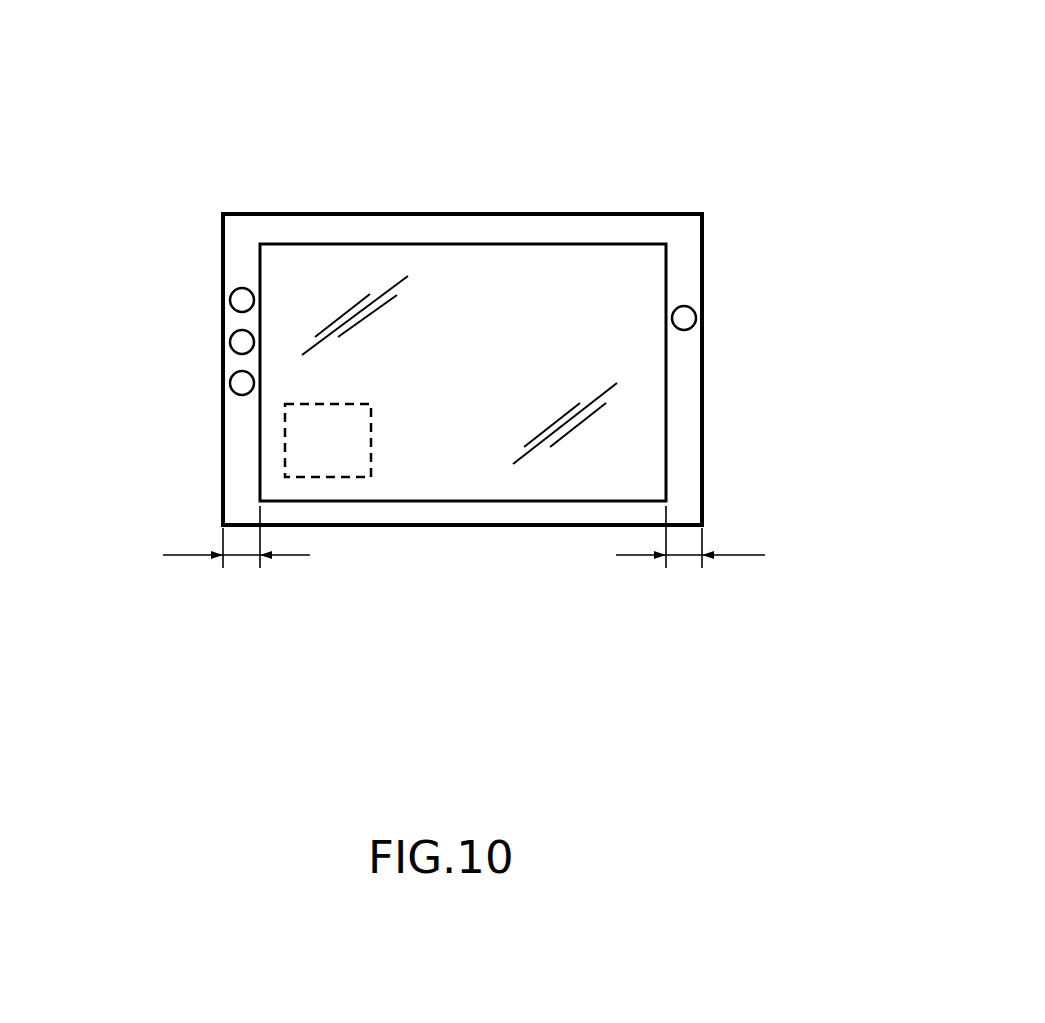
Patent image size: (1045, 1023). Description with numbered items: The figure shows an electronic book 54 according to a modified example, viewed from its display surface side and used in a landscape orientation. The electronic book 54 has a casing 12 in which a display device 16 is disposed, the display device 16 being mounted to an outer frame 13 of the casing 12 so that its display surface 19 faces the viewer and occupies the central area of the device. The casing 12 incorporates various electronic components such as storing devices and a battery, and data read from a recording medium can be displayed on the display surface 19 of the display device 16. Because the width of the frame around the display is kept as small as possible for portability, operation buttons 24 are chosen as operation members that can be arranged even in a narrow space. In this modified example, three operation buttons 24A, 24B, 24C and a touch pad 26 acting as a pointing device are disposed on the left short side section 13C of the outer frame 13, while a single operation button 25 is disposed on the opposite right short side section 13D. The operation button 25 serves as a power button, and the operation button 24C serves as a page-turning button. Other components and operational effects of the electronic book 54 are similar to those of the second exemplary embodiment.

The electronic book 54 is at (453, 93).
The casing 12 is at (422, 526).
The outer frame 13 is at (261, 209).
The short side section 13C is at (235, 442).
The short side section 13D is at (690, 250).
The display device 16 is at (583, 503).
The display surface 19 is at (520, 257).
The operation button 24 is at (138, 270).
The operation button 24A is at (231, 296).
The operation button 24B is at (231, 338).
The operation button 24C is at (231, 380).
The operation button 25 is at (694, 330).
The touch pad 26 is at (332, 478).